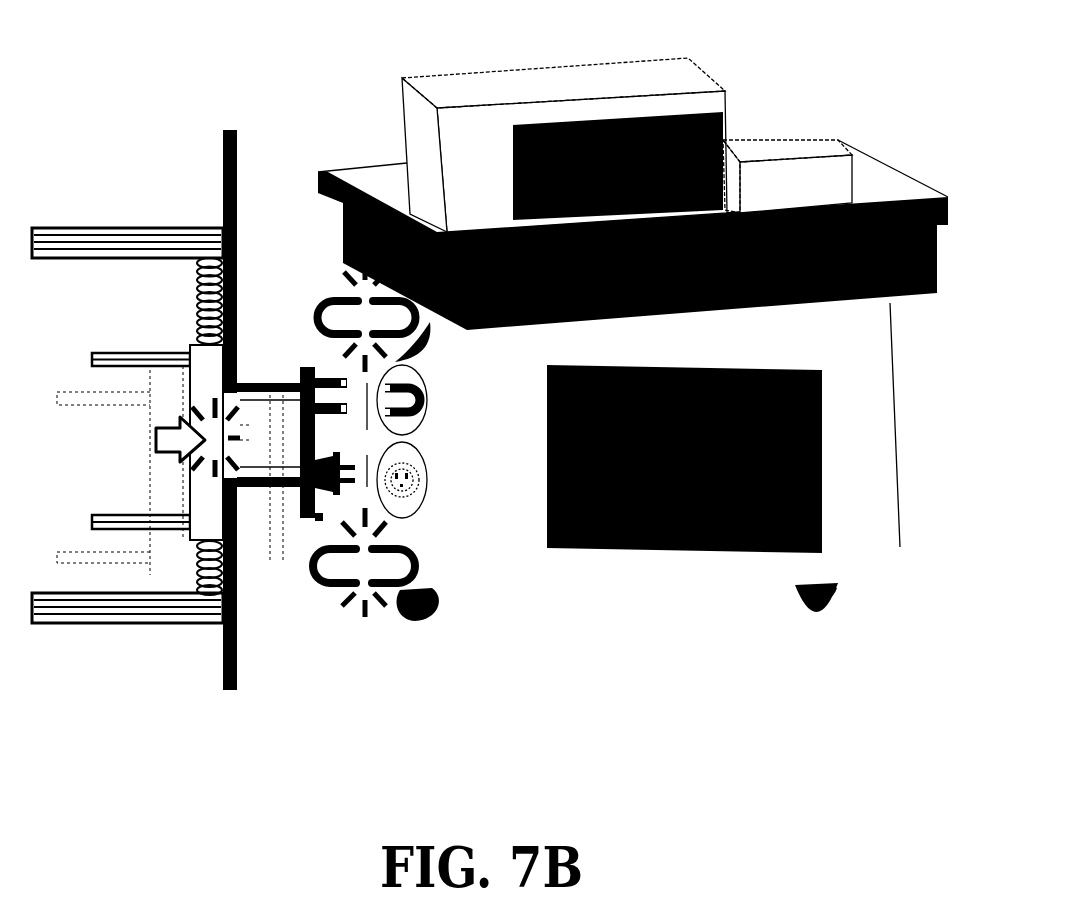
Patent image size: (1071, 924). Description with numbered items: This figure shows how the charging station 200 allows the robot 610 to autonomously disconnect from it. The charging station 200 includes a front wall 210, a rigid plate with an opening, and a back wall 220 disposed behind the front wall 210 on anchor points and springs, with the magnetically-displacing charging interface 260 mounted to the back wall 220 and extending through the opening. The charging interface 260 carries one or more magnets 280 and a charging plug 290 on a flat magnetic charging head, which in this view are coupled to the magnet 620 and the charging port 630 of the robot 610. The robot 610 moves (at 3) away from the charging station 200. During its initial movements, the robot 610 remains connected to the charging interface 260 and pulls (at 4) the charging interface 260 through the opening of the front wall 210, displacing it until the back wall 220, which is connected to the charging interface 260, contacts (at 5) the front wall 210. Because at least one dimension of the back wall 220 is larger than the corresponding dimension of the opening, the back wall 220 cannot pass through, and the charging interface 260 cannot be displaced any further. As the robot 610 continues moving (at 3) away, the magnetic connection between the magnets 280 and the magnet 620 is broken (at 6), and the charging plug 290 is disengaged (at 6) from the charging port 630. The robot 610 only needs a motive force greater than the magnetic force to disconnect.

The charging station 200 is at (116, 118).
The front wall 210 is at (230, 688).
The back wall 220 is at (207, 495).
The magnetically-displacing charging interface 260 is at (271, 355).
The magnets 280 is at (332, 414).
The charging plug 290 is at (350, 485).
The robot 610 is at (867, 158).
The magnet 620 is at (418, 392).
The charging port 630 is at (415, 482).
The robot movement away from charging station 3 is at (522, 26).
The displacement of charging interface 4 is at (182, 351).
The back wall contacting front wall 5 is at (167, 439).
The breaking of magnetic connection and disengagement of plug 6 is at (364, 440).